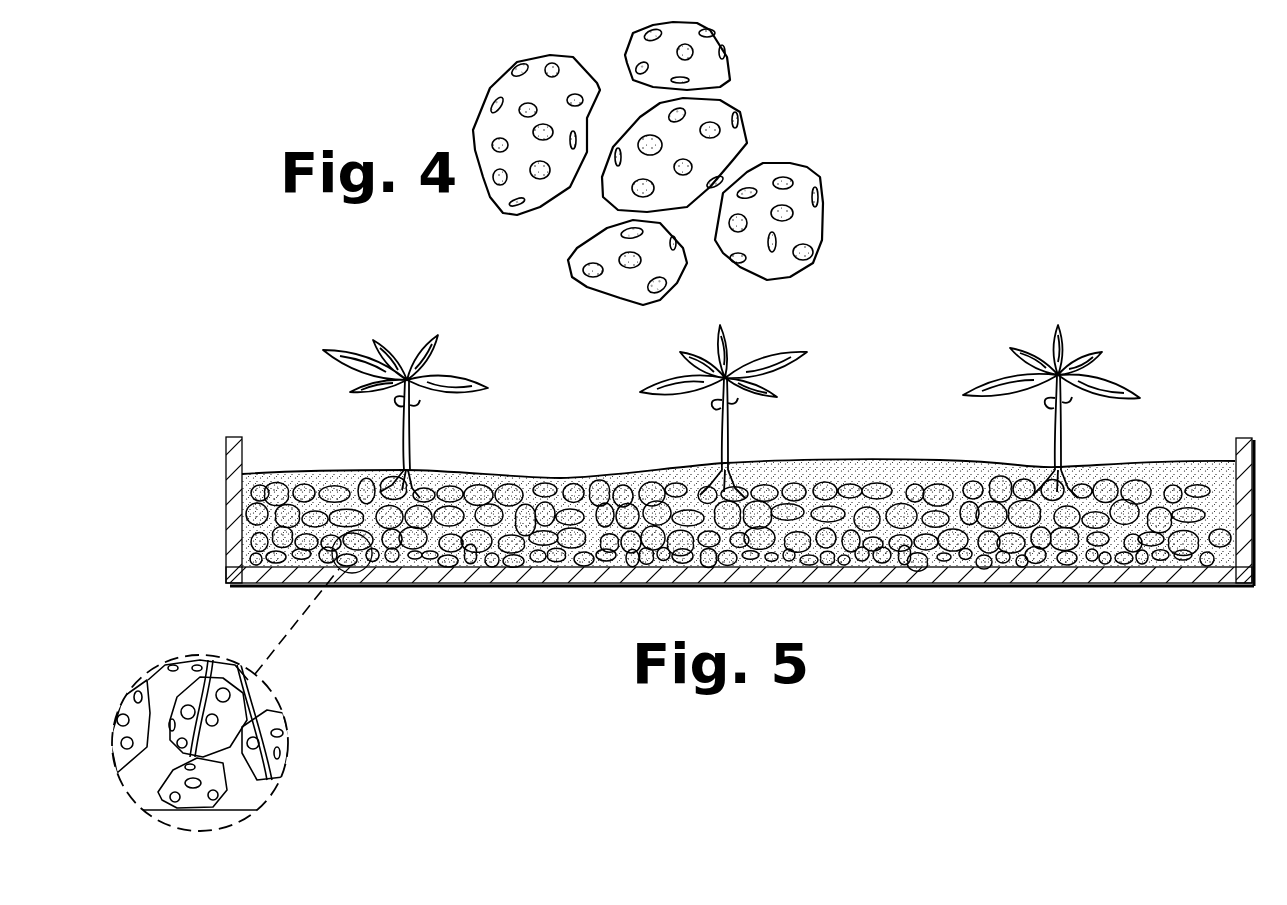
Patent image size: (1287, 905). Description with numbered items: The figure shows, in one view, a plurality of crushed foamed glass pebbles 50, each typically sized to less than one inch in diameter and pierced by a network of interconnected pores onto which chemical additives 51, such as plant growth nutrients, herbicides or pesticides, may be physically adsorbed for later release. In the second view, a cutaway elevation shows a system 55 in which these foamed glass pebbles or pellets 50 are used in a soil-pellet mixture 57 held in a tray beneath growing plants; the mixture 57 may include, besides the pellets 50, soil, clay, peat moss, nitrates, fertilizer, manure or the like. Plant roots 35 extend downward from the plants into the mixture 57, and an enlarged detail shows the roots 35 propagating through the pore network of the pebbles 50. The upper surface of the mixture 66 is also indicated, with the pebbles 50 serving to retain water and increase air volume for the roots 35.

In FIG. 4, the crushed foamed glass pebbles 50 is at (806, 102).
In FIG. 5, the crushed foamed glass pebbles 50 is at (420, 560).
In FIG. 4, the chemical additives 51 is at (548, 62).
In FIG. 5, the system 55 is at (242, 475).
In FIG. 5, the plant roots 35 is at (437, 478).
In FIG. 5, the top surface of growing medium 66 is at (596, 476).
In FIG. 5, the soil-pellet mixture 57 is at (1184, 456).